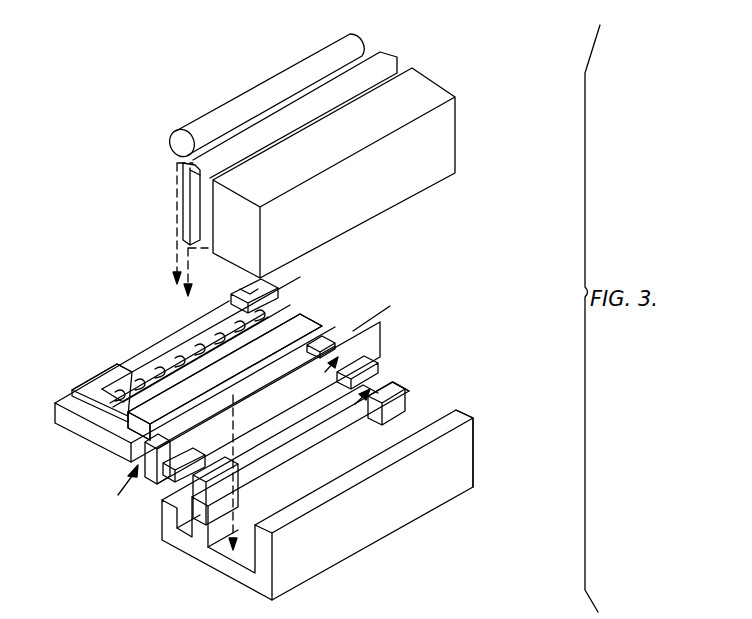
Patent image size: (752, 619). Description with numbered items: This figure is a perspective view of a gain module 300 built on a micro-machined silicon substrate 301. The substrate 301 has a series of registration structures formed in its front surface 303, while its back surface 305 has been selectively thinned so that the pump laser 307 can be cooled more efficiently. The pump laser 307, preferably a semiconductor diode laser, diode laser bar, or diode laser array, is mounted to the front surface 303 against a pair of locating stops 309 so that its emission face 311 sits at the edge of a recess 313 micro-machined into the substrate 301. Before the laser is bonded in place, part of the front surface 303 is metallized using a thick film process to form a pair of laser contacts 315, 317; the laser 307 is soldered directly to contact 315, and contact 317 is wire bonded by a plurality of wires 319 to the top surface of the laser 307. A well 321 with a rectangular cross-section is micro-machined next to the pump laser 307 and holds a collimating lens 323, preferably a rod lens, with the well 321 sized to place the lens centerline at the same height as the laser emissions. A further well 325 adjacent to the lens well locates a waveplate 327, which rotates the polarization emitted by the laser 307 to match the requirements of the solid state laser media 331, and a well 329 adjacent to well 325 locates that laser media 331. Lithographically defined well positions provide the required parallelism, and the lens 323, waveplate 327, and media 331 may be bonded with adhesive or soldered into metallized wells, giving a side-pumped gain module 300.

The gain module 300 is at (518, 42).
The silicon substrate 301 is at (306, 542).
The front surface 303 is at (473, 418).
The back surface 305 is at (87, 437).
The pump laser 307 is at (265, 327).
The locating stops 309 is at (255, 402).
The emission face 311 is at (322, 336).
The recess 313 is at (163, 432).
The laser contact 315 is at (96, 383).
The laser contact 317 is at (270, 290).
The wires 319 is at (182, 350).
The well 321 is at (366, 356).
The collimating lens 323 is at (232, 100).
The well 325 is at (392, 382).
The waveplate 327 is at (383, 52).
The well 329 is at (406, 413).
The solid state laser media 331 is at (442, 135).